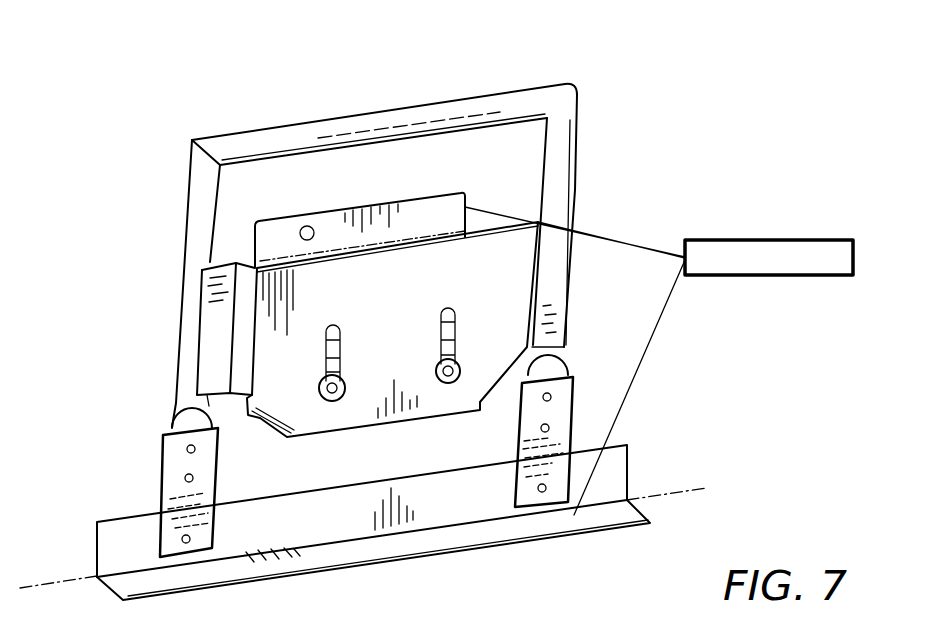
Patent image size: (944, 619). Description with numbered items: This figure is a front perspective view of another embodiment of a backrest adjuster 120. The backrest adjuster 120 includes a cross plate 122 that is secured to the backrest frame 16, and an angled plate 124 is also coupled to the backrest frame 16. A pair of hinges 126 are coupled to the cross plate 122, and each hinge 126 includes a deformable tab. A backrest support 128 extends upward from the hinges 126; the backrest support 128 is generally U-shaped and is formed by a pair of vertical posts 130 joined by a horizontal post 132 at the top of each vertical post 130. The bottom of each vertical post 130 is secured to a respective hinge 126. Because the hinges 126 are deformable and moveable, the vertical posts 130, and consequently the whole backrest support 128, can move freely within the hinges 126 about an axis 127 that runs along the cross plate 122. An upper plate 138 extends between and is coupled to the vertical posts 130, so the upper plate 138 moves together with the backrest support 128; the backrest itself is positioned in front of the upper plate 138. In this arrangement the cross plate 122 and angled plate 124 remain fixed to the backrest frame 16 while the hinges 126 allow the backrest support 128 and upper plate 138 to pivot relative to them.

The backrest adjuster 120 is at (680, 90).
The cross plate 122 is at (467, 535).
The angled plate 124 is at (402, 205).
The hinges 126 is at (177, 465).
The axis 127 is at (670, 488).
The backrest support 128 is at (572, 153).
The vertical posts 130 is at (572, 202).
The horizontal post 132 is at (440, 108).
The upper plate 138 is at (212, 347).
The backrest frame 16 is at (770, 240).